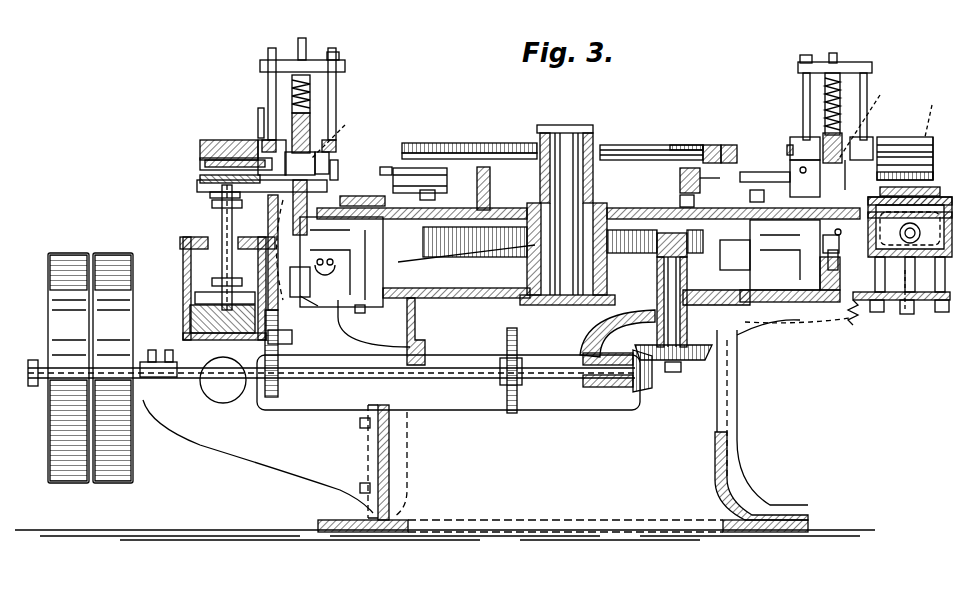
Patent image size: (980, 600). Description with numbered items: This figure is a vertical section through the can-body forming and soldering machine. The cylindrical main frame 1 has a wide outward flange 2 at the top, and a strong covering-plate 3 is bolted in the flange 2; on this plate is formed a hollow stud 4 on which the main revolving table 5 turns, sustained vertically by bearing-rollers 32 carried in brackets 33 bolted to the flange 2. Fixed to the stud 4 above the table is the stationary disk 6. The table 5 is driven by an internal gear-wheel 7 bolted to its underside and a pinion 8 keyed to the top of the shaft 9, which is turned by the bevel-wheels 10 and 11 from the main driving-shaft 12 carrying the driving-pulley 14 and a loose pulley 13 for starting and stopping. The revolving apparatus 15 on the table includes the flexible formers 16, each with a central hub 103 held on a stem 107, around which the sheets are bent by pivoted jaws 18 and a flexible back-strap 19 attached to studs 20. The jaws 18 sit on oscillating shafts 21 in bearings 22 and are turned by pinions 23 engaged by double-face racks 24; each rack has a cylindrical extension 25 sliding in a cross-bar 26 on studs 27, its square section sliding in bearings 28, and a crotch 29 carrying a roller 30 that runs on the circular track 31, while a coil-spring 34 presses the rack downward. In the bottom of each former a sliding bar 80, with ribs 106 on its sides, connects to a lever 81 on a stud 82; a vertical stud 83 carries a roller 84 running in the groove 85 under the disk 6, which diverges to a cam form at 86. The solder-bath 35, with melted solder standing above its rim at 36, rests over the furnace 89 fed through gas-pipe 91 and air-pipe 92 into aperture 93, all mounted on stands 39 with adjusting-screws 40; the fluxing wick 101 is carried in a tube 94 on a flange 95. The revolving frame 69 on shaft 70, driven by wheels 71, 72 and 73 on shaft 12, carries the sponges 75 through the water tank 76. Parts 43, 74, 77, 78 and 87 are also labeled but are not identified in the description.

The main frame 1 is at (445, 370).
The flange 2 is at (405, 305).
The covering-plate 3 is at (460, 298).
The hollow stud 4 is at (565, 126).
The main table 5 is at (450, 212).
The stationary disk 6 is at (640, 150).
The internal gear-wheel 7 is at (430, 257).
The pinion 8 is at (655, 260).
The shaft 9 is at (688, 312).
The bevel-wheel 10 is at (673, 362).
The bevel-wheel 11 is at (652, 375).
The main driving-shaft 12 is at (352, 366).
The loose pulley 13 is at (70, 254).
The main driving-pulley 14 is at (113, 254).
The revolving apparatus 15 is at (232, 130).
The flexible die or former 16 is at (200, 155).
The pivoted jaw 18 is at (905, 137).
The flexible back-strap 19 is at (212, 136).
The stud 20 is at (933, 172).
The oscillating shaft 21 is at (330, 150).
The bearing 22 is at (264, 140).
The pinion 23 is at (785, 167).
The double-face rack 24 is at (604, 116).
The cylindrical extension 25 is at (566, 47).
The cross-bar 26 is at (338, 66).
The stud 27 is at (268, 100).
The bearing 28 is at (338, 165).
The crotch 29 is at (578, 273).
The roller 30 is at (307, 205).
The circular track 31 is at (845, 280).
The bearing-roller 32 is at (560, 262).
The bracket 33 is at (532, 266).
The coil-spring 34 is at (292, 100).
The solder-bath 35 is at (958, 222).
The melted solder surface 36 is at (952, 203).
The stand 39 is at (950, 298).
The vertical adjusting-screw 40 is at (945, 312).
The sprocket 43 is at (501, 370).
The revolving frame 69 is at (222, 222).
The shaft 70 is at (180, 246).
The wheel 71 is at (268, 224).
The wheel 72 is at (292, 337).
The wheel 73 is at (278, 388).
The collar 74 is at (210, 196).
The sponge 75 is at (200, 180).
The tank 76 is at (183, 278).
The collar 77 is at (236, 243).
The cap 78 is at (183, 237).
The sliding bar 80 is at (197, 180).
The lever 81 is at (556, 180).
The stud 82 is at (680, 200).
The vertical stud 83 is at (455, 145).
The roller 84 is at (386, 163).
The channel or groove 85 is at (714, 144).
The cam portion 86 is at (735, 146).
The block 87 is at (940, 152).
The furnace 89 is at (915, 270).
The gas-pipe 91 is at (952, 233).
The air-pipe 92 is at (920, 238).
The aperture 93 is at (945, 280).
The hollow supporting-tube 94 is at (912, 314).
The flange 95 is at (940, 315).
The wiper or wick 101 is at (940, 192).
The nave or hub 103 is at (852, 233).
The rib or tongue 106 is at (258, 112).
The stem 107 is at (205, 164).